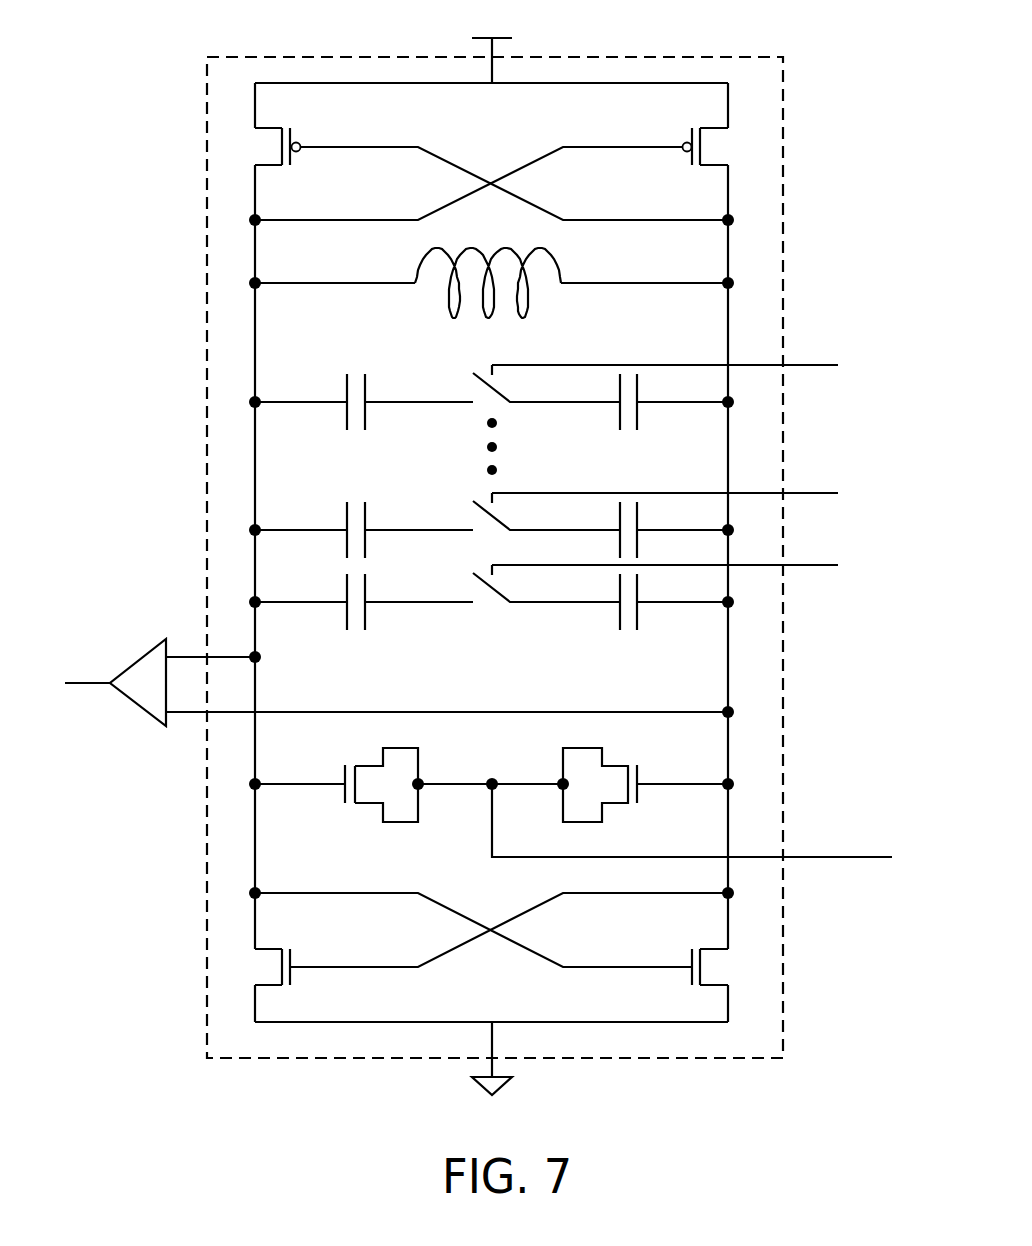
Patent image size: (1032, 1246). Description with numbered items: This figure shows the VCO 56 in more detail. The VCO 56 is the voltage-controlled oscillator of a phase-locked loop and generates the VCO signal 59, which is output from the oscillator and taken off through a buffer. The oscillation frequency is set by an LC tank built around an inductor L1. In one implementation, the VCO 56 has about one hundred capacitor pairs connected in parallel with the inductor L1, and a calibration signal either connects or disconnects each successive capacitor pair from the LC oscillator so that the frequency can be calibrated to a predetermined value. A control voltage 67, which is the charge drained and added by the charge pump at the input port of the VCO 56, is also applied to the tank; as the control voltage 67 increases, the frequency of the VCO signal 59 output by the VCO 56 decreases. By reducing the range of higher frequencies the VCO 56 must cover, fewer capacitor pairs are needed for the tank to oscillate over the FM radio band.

The VCO 56 is at (682, 57).
The VCO signal 59 is at (73, 670).
The control voltage 67 is at (847, 843).
The inductor L1 is at (470, 248).